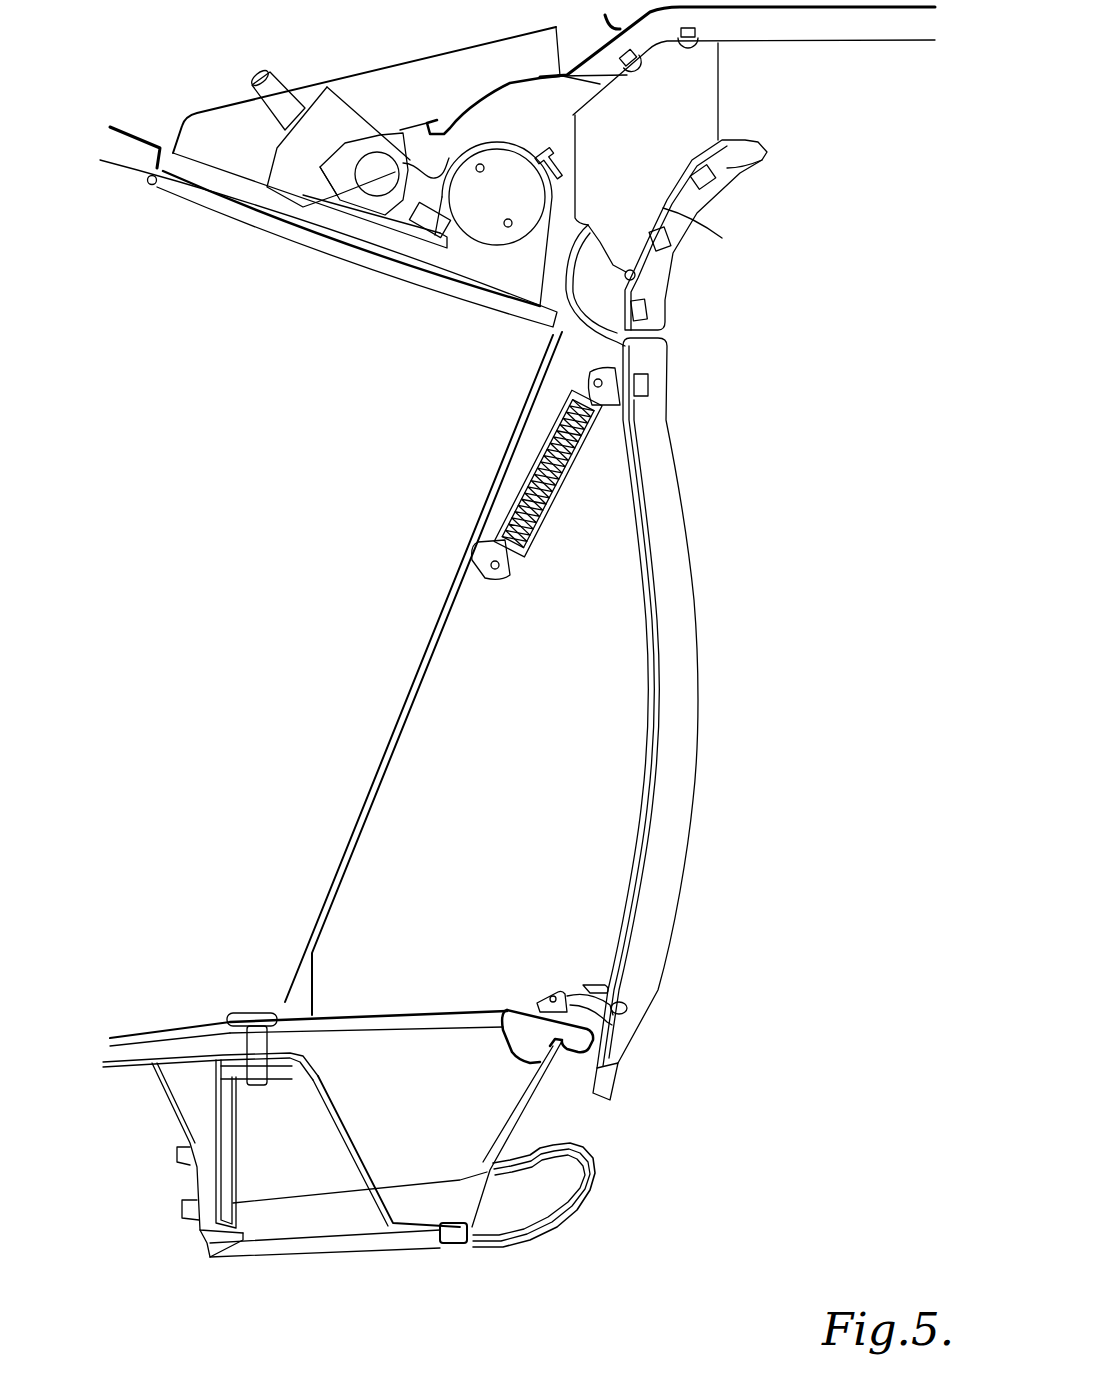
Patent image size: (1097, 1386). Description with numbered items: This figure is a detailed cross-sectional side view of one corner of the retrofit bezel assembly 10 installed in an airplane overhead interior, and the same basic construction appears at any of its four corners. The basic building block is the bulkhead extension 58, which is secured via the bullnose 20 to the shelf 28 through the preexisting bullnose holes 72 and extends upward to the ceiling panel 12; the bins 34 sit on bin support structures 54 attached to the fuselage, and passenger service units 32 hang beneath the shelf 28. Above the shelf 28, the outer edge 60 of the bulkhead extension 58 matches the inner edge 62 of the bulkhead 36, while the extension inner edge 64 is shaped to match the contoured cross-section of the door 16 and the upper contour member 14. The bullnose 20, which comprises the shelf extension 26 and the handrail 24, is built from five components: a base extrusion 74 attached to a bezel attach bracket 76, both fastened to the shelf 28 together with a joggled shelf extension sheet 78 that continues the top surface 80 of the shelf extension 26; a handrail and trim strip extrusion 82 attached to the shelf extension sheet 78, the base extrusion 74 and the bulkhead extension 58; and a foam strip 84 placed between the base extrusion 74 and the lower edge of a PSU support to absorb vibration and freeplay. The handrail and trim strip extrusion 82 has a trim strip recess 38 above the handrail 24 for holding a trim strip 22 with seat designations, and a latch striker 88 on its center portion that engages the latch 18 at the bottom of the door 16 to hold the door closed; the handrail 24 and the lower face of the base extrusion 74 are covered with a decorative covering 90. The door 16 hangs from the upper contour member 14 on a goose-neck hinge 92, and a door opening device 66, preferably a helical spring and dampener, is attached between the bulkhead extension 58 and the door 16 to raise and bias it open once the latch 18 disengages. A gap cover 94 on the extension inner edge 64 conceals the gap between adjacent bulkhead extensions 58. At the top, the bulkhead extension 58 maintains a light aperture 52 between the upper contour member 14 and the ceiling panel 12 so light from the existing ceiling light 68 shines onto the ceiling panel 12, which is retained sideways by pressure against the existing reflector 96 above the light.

The retrofit bezel assembly 10 is at (850, 440).
The ceiling panel 12 is at (847, 25).
The upper contour member 14 is at (730, 167).
The door 16 is at (683, 625).
The latch 18 is at (620, 1075).
The bullnose 20 is at (695, 1235).
The trim strip 22 is at (568, 1120).
The handrail 24 is at (607, 1228).
The shelf extension 26 is at (408, 962).
The shelf 28 is at (125, 1045).
The passenger service unit 32 is at (93, 1163).
The bin 34 is at (125, 160).
The bulkhead 36 is at (141, 555).
The trim strip recess 38 is at (618, 1157).
The light aperture 52 is at (735, 97).
The bin support structure 54 is at (280, 72).
The bulkhead extension 58 is at (538, 664).
The outer edge 60 is at (390, 770).
The inner edge 62 is at (452, 590).
The extension inner edge 64 is at (632, 548).
The door opening device 66 is at (548, 440).
The existing ceiling light 68 is at (478, 220).
The preexisting bullnose holes 72 is at (252, 1010).
The base extrusion 74 is at (343, 1130).
The bezel attach bracket 76 is at (393, 1022).
The shelf extension sheet 78 is at (430, 1010).
The top surface 80 is at (188, 1025).
The handrail and trim strip extrusion 82 is at (488, 1200).
The foam strip 84 is at (205, 1238).
The latch striker 88 is at (582, 958).
The decorative covering 90 is at (527, 1243).
The hinge 92 is at (590, 230).
The gap cover 94 is at (690, 223).
The existing reflector 96 is at (497, 70).